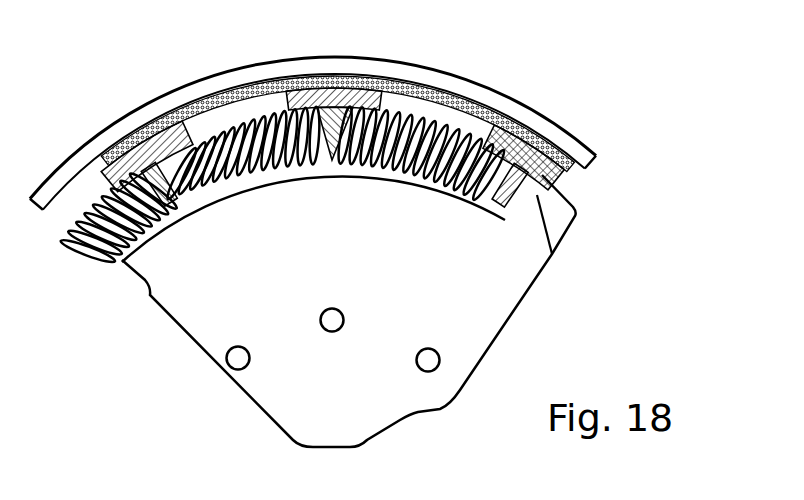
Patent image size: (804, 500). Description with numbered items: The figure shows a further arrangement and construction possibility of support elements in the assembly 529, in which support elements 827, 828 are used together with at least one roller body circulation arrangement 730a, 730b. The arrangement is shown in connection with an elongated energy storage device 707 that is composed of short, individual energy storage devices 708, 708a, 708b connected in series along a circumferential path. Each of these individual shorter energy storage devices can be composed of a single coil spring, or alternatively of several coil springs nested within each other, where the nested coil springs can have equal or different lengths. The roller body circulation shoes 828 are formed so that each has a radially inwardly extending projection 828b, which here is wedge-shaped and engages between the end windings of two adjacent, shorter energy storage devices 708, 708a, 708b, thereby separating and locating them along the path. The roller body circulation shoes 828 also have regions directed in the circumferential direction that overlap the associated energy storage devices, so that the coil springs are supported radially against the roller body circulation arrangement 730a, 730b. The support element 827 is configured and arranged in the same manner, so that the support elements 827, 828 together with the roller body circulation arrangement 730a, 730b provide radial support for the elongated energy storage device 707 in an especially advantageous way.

The drum assembly 529 is at (91, 13).
The roller body circulation arrangement 730a is at (550, 126).
The roller body circulation arrangement 730b is at (335, 80).
The radially inwardly extending projection 828b is at (173, 172).
The roller body circulation shoe 828 is at (372, 88).
The support element 827 is at (552, 254).
The energy storage device 708b is at (115, 254).
The energy storage device 708a is at (272, 165).
The energy storage device 708 is at (449, 185).
The elongated energy storage device 707 is at (388, 188).